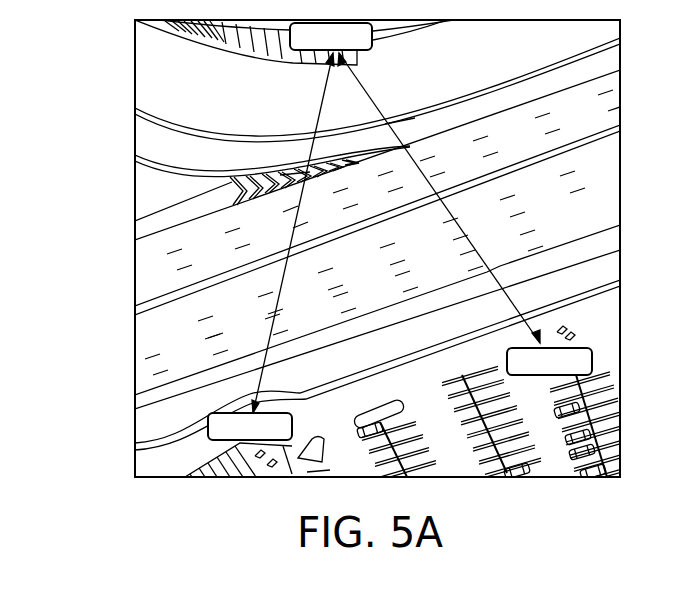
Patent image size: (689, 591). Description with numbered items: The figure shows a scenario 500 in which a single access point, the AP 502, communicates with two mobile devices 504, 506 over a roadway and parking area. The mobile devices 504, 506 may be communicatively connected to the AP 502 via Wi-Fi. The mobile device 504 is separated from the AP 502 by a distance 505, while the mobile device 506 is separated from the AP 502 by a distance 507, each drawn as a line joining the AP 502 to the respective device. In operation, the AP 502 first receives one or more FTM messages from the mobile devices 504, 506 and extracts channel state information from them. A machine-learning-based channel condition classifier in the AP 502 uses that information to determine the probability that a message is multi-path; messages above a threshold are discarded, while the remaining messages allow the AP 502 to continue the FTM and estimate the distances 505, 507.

The scenario 500 is at (328, 246).
The AP 502 is at (331, 36).
The mobile device 504 is at (465, 214).
The distance 505 is at (398, 128).
The mobile device 506 is at (271, 246).
The distance 507 is at (305, 165).